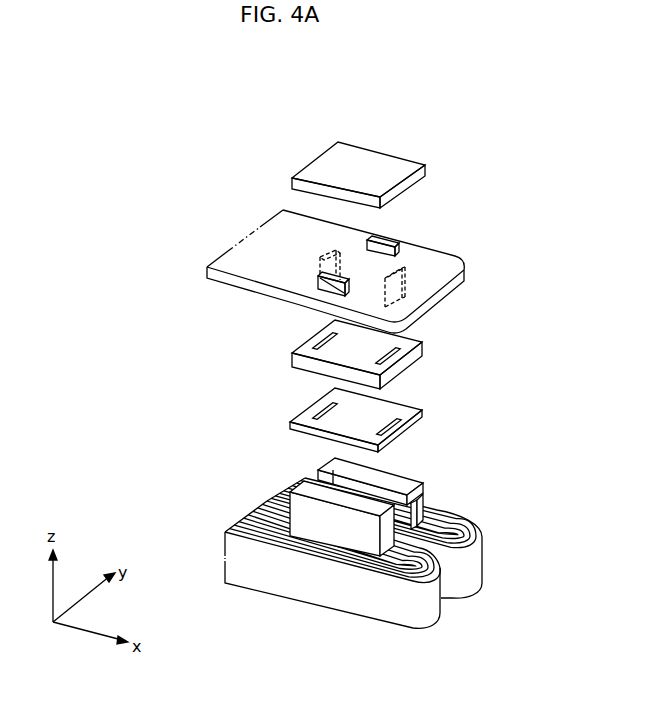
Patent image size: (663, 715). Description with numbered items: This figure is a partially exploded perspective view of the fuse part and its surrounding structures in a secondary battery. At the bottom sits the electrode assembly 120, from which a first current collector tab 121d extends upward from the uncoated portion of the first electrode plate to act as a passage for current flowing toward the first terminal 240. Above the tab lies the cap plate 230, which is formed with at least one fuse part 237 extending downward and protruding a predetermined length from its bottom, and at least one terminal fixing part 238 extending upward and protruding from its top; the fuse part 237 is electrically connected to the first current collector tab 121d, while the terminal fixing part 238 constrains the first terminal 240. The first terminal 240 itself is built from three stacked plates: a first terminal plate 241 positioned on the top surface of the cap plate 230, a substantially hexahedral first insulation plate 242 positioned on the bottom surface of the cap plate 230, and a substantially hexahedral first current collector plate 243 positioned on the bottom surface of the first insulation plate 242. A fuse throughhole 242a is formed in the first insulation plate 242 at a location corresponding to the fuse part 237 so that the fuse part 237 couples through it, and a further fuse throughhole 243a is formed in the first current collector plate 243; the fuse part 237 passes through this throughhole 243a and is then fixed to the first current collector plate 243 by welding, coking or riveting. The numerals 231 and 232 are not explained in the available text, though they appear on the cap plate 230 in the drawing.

The electrode assembly 120 is at (341, 622).
The first current collector tab 121d is at (406, 482).
The cap plate 230 is at (250, 238).
The first surface of substrate 231 is at (233, 276).
The second surface of substrate 232 is at (442, 292).
The fuse part 237 is at (405, 268).
The terminal fixing part 238 is at (392, 238).
The first terminal 240 is at (430, 155).
The first terminal plate 241 is at (362, 152).
The first insulation plate 242 is at (293, 358).
The fuse throughhole 242a is at (362, 340).
The first current collector plate 243 is at (423, 415).
The fuse throughhole 243a is at (375, 413).